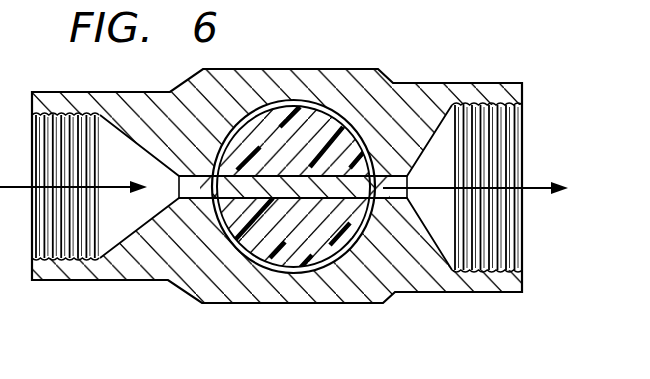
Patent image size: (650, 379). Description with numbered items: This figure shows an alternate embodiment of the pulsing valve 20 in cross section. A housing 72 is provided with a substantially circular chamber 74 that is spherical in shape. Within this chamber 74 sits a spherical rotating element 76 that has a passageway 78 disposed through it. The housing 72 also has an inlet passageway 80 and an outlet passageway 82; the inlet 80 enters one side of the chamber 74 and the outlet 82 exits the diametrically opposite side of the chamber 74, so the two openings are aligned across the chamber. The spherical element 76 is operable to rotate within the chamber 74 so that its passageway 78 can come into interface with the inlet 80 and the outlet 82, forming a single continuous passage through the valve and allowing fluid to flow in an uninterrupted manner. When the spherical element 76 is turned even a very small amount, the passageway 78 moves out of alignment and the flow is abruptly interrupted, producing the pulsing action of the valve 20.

The pulsing valve 20 is at (307, 68).
The housing 72 is at (412, 133).
The chamber 74 is at (283, 272).
The spherical rotating element 76 is at (310, 243).
The passageway 78 is at (282, 182).
The inlet passageway 80 is at (197, 195).
The outlet passageway 82 is at (395, 199).